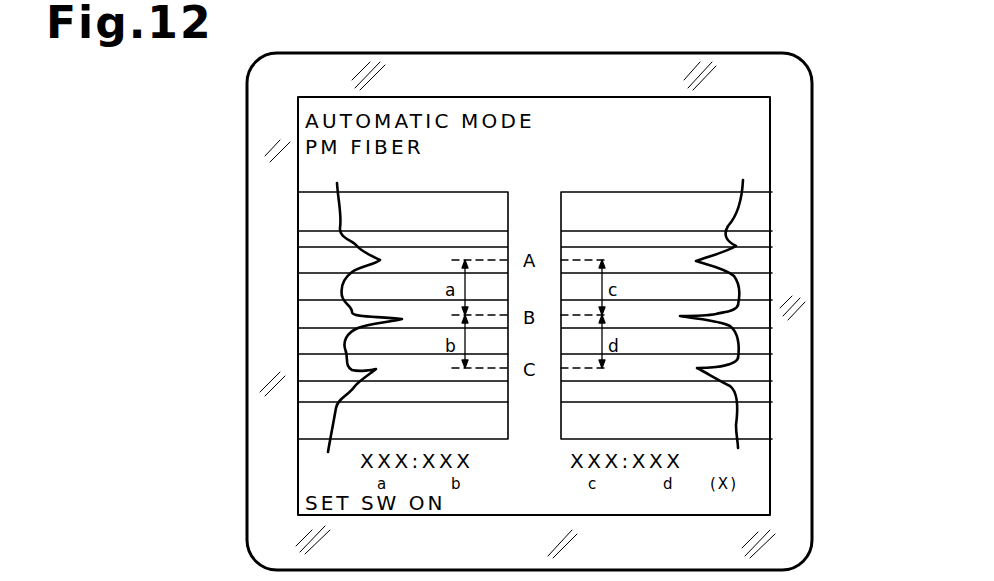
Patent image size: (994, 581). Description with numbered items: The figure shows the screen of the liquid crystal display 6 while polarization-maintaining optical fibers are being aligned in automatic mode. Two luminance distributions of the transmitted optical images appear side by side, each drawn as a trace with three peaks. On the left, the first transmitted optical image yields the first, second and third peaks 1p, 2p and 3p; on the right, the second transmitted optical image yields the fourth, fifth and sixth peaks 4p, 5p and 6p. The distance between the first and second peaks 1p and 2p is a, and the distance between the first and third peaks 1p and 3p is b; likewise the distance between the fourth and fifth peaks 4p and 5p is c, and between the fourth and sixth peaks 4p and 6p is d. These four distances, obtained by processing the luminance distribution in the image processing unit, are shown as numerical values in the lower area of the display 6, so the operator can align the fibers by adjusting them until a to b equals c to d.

The liquid crystal display 6 is at (822, 311).
The first peak 1p is at (400, 318).
The second peak 2p is at (378, 259).
The third peak 3p is at (372, 370).
The fourth peak 4p is at (680, 316).
The fifth peak 5p is at (697, 261).
The sixth peak 6p is at (700, 370).